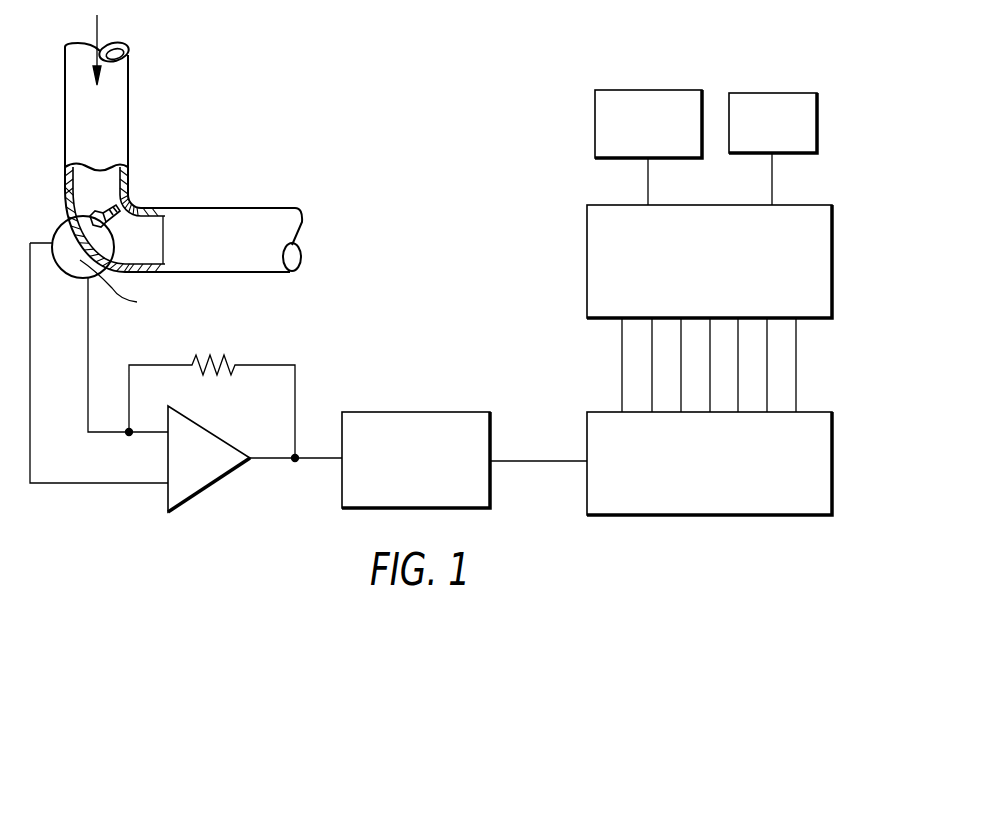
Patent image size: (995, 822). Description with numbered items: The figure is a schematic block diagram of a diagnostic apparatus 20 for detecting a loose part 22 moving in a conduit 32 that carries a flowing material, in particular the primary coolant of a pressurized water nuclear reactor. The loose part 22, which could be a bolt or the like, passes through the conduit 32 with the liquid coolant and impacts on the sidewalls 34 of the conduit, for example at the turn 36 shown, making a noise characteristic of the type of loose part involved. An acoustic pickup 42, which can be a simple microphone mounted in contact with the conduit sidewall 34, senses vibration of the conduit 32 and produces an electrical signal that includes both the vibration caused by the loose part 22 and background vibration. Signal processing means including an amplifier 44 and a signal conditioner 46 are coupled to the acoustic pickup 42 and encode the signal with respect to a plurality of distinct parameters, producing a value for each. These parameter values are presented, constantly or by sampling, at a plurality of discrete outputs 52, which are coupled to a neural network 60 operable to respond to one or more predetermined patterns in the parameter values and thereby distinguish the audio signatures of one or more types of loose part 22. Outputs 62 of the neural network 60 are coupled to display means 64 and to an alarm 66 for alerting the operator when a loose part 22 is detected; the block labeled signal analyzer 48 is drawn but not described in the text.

The diagnostic apparatus 20 is at (566, 217).
The loose part 22 is at (93, 211).
The conduit 32 is at (105, 45).
The sidewall 34 is at (75, 148).
The turn 36 is at (105, 240).
The acoustic pickup 42 is at (68, 242).
The amplifier 44 is at (225, 470).
The signal conditioner 46 is at (463, 412).
The signal analyzer 48 is at (820, 412).
The discrete outputs 52 is at (622, 393).
The neural network 60 is at (832, 272).
The outputs 62 is at (648, 188).
The display means 64 is at (615, 90).
The alarm 66 is at (772, 93).